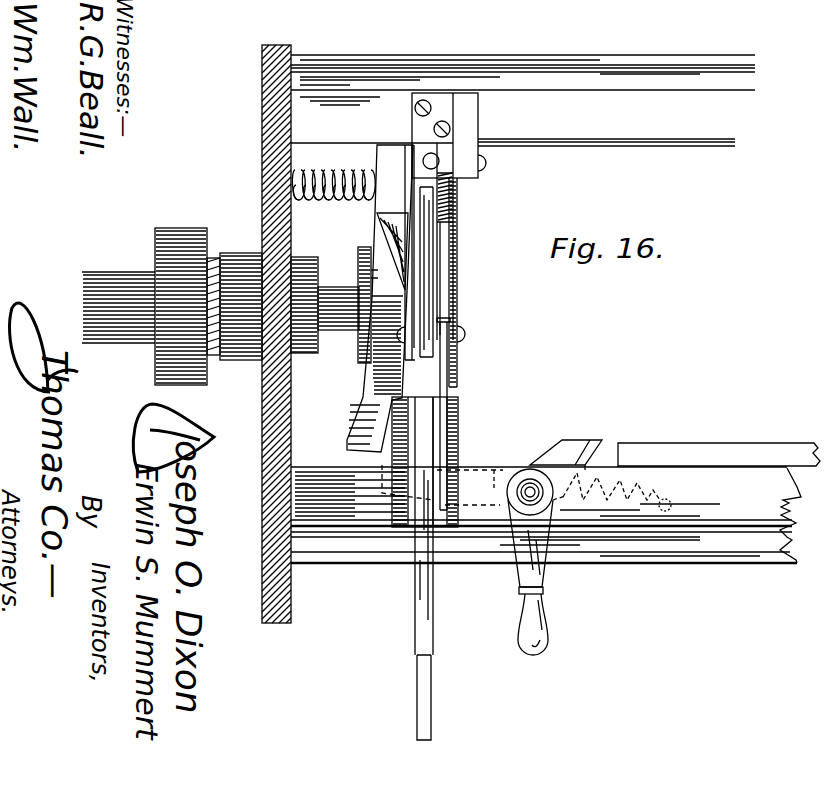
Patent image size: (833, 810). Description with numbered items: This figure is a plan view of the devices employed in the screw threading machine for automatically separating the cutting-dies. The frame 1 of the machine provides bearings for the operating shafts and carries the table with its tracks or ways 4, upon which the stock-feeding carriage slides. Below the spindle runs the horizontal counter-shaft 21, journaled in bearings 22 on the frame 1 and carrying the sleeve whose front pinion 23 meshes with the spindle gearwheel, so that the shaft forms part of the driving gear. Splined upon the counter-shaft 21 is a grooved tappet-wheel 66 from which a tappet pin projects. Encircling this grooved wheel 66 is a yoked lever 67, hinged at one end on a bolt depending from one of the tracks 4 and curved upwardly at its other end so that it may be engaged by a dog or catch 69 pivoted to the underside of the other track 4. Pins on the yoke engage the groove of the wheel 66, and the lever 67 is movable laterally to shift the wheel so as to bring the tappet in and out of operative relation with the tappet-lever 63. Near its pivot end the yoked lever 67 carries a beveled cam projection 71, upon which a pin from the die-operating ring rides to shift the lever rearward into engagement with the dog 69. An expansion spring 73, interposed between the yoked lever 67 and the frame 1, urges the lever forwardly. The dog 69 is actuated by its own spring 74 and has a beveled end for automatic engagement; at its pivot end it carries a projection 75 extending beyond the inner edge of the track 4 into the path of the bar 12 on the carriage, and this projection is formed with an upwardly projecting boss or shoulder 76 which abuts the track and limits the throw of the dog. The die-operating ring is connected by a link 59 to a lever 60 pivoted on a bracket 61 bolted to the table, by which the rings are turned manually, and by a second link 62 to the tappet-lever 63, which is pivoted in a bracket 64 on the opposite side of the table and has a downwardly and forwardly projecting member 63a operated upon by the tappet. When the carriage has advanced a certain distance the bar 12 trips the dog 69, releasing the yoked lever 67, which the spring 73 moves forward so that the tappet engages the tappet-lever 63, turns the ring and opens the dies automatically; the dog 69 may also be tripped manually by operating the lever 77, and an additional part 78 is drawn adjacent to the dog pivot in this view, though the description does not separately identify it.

The frame 1 is at (262, 182).
The tracks or ways 4 is at (655, 135).
The bar 12 is at (720, 446).
The counter-shaft 21 is at (343, 333).
The bearings 22 is at (247, 362).
The pinion 23 is at (155, 249).
The link 59 is at (447, 370).
The lever 60 is at (415, 605).
The bracket 61 is at (460, 417).
The link 62 is at (433, 250).
The tappet-lever 63 is at (458, 209).
The downwardly and forwardly projecting member 63a is at (458, 287).
The bracket 64 is at (470, 148).
The grooved wheel 66 is at (360, 263).
The yoked lever 67 is at (365, 383).
The dog or catch 69 is at (500, 467).
The cam projection 71 is at (380, 275).
The expansion spring 73 is at (331, 203).
The spring 74 is at (658, 501).
The projection 75 is at (557, 445).
The boss or shoulder 76 is at (578, 458).
The lever 77 is at (543, 575).
The pawl 78 is at (548, 503).